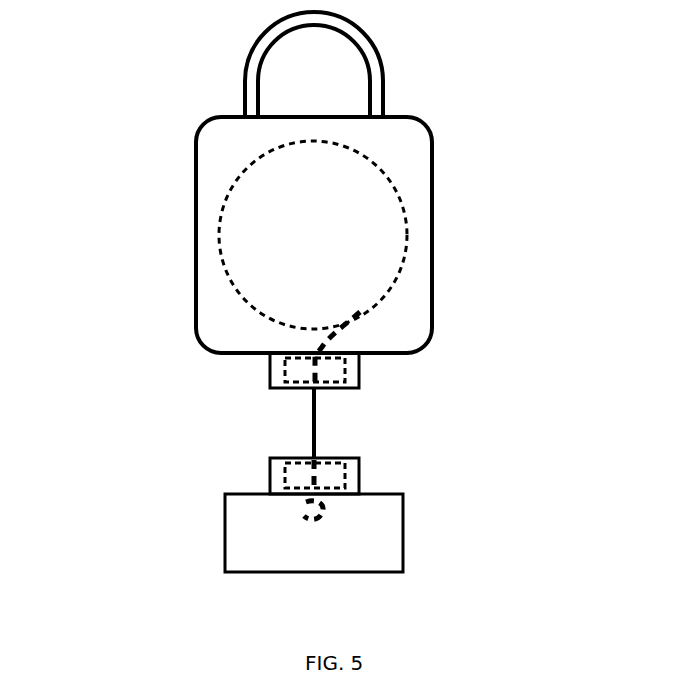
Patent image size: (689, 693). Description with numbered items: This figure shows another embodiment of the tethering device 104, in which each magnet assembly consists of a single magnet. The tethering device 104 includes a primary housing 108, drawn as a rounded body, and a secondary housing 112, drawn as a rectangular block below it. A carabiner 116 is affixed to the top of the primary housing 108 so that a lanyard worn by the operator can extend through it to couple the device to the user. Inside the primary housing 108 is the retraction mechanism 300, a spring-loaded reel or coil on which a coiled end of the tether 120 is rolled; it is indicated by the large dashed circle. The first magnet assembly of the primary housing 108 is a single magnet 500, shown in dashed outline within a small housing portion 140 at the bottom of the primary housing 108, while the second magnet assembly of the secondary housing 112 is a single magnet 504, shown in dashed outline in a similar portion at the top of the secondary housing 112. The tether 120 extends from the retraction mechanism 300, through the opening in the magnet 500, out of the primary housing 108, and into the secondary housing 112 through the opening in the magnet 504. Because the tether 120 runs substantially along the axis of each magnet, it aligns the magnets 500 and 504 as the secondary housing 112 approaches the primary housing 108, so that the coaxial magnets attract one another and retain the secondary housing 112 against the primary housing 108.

The tethering device 104 is at (295, 199).
The carabiner 116 is at (383, 52).
The primary housing 108 is at (196, 235).
The retraction mechanism 300 is at (407, 222).
The connector housing 140 is at (359, 375).
The magnet 500 is at (285, 373).
The tether 120 is at (314, 428).
The magnet 504 is at (285, 477).
The secondary housing 112 is at (225, 512).